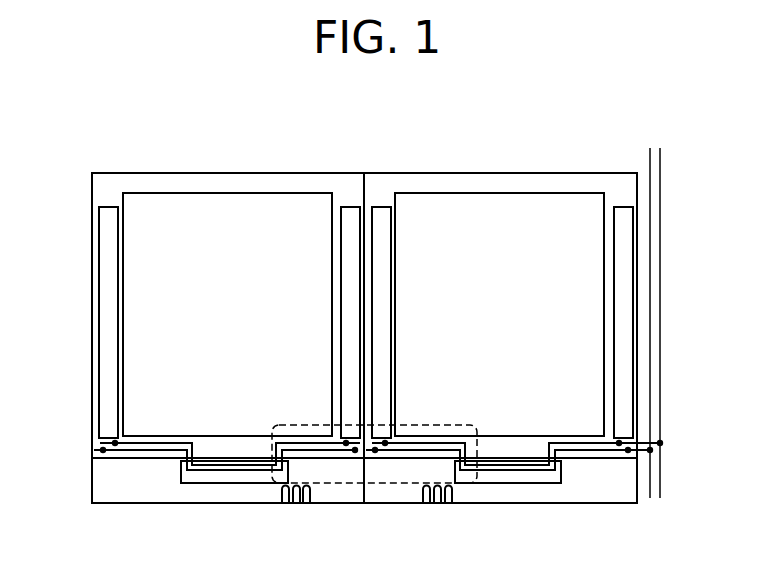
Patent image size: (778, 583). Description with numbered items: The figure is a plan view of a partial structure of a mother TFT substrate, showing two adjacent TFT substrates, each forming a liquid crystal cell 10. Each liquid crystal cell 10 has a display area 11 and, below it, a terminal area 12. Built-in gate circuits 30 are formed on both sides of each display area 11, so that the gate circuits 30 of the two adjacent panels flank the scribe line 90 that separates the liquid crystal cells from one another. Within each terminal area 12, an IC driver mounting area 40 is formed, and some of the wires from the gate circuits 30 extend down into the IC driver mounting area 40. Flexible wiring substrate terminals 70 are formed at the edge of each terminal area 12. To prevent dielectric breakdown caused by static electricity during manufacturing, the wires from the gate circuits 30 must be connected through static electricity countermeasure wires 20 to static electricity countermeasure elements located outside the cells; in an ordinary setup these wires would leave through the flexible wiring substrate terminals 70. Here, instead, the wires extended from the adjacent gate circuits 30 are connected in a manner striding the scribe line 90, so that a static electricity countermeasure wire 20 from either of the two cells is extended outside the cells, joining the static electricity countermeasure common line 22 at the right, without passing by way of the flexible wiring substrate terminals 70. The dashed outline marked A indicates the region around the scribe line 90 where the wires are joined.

The liquid crystal cell 10 is at (417, 182).
The display area 11 is at (578, 197).
The terminal area 12 is at (107, 484).
The static electricity countermeasure wire 20 is at (647, 437).
The static electricity countermeasure common line 22 is at (663, 420).
The built-in gate circuit 30 is at (341, 283).
The IC driver mounting area 40 is at (205, 485).
The flexible wiring substrate terminal 70 is at (285, 503).
The scribe line 90 is at (498, 173).
The enlarged region A is at (387, 482).